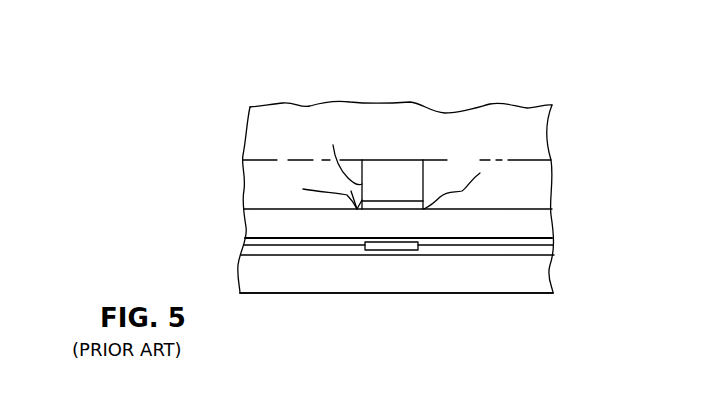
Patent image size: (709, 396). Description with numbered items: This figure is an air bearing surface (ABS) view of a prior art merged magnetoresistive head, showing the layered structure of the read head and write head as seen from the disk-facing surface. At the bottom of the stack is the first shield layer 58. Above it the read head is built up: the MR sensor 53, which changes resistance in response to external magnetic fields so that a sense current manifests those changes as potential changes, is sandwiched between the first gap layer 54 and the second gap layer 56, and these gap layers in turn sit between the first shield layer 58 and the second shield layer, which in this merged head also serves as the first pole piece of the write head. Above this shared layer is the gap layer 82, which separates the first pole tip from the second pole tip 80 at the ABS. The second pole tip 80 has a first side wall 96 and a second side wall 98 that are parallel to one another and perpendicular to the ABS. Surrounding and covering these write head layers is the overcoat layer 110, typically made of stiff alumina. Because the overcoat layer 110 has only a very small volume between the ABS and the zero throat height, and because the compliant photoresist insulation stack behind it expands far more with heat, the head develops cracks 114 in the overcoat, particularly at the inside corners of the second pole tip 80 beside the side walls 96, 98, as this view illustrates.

The overcoat layer 110 is at (533, 142).
The second pole tip 80 is at (403, 168).
The gap layer 82 is at (382, 201).
The second side wall 98 is at (423, 178).
The cracks 114 is at (334, 141).
The first side wall 96 is at (361, 182).
The first gap layer 54 is at (302, 253).
The MR sensor 53 is at (391, 250).
The second gap layer 56 is at (483, 242).
The first shield layer 58 is at (543, 277).